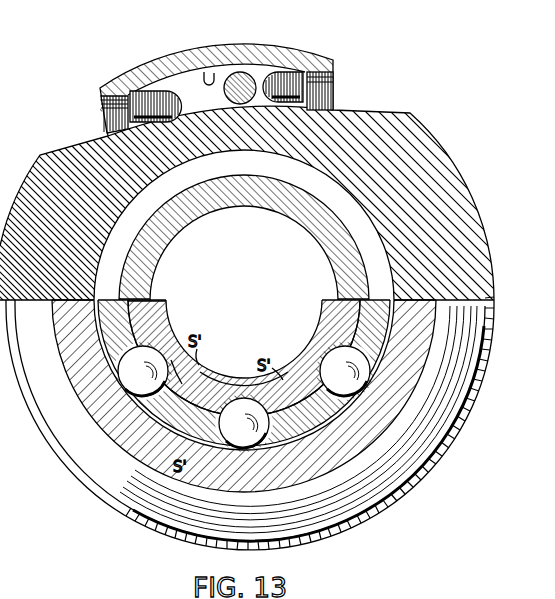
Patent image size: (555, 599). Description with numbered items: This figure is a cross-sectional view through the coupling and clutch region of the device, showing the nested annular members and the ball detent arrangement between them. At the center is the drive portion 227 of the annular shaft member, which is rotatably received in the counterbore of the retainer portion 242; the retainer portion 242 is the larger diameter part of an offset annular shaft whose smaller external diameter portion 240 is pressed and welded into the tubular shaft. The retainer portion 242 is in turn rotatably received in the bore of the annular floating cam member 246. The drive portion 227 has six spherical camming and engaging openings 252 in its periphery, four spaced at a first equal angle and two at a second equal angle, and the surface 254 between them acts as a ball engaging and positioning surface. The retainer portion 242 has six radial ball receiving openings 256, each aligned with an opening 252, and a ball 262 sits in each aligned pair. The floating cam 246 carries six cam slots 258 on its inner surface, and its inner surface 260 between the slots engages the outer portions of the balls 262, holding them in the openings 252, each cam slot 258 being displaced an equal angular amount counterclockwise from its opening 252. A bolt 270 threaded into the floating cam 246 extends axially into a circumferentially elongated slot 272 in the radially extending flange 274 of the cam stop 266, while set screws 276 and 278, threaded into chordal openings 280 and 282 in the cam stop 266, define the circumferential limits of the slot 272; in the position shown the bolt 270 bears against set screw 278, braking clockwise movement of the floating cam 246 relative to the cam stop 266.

The drive portion 227 is at (172, 310).
The smaller external diameter portion 240 is at (244, 237).
The retainer portion 242 is at (383, 322).
The floating cam member 246 is at (374, 401).
The spherical camming and engaging openings 252 is at (158, 348).
The surface 254 is at (186, 371).
The ball receiving openings 256 is at (264, 452).
The cam slots 258 is at (72, 378).
The inner surface 260 is at (153, 414).
The ball 262 is at (223, 448).
The cam stop 266 is at (248, 173).
The bolt 270 is at (237, 74).
The circumferentially elongated slot 272 is at (209, 72).
The radially extending flange 274 is at (264, 56).
The set screw 276 is at (150, 92).
The set screw 278 is at (280, 73).
The chordal opening 280 is at (110, 125).
The chordal opening 282 is at (338, 93).